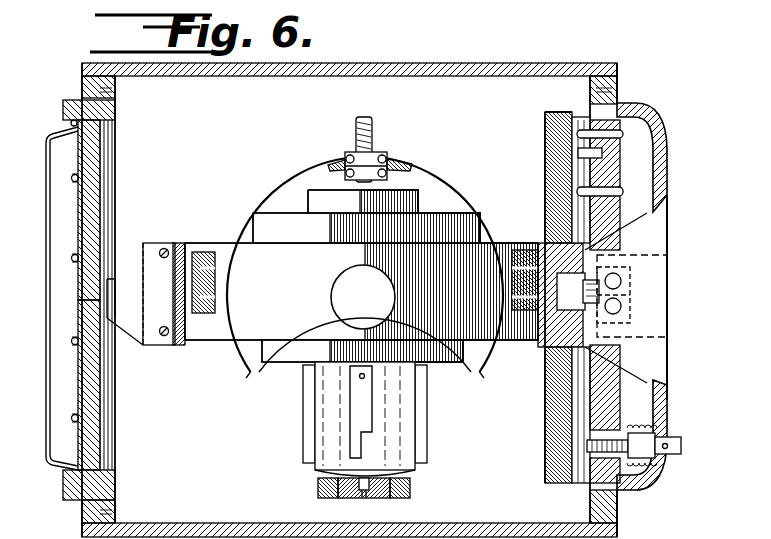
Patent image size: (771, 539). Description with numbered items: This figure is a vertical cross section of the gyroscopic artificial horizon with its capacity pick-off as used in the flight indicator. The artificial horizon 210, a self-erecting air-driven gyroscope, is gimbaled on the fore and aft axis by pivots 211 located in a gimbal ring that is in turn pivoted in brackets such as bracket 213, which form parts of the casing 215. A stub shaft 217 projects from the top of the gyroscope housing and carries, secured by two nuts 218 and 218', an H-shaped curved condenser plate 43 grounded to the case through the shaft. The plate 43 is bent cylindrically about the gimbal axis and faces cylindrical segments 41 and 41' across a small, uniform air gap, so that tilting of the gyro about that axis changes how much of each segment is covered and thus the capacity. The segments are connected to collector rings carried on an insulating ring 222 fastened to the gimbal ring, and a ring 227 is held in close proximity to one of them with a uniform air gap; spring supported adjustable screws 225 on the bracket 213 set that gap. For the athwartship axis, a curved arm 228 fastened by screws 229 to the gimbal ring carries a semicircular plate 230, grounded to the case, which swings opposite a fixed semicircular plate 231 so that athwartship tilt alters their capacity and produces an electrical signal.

The casing 215 is at (443, 527).
The semicircular plate 231 is at (113, 130).
The semicircular plate 230 is at (113, 160).
The curved arm 228 is at (134, 262).
The screws 229 is at (165, 252).
The artificial horizon 210 is at (386, 344).
The pivot 211 is at (363, 297).
The cylindrical segment 41 is at (444, 267).
The cylindrical segment 41' is at (296, 267).
The H-shaped curved condenser plate 43 is at (432, 187).
The stub shaft 217 is at (359, 120).
The nut 218 is at (384, 144).
The nut 218' is at (393, 149).
The insulating ring 222 is at (550, 122).
The ring 227 is at (577, 116).
The bracket 213 is at (668, 208).
The spring supported adjustable screws 225 is at (647, 442).